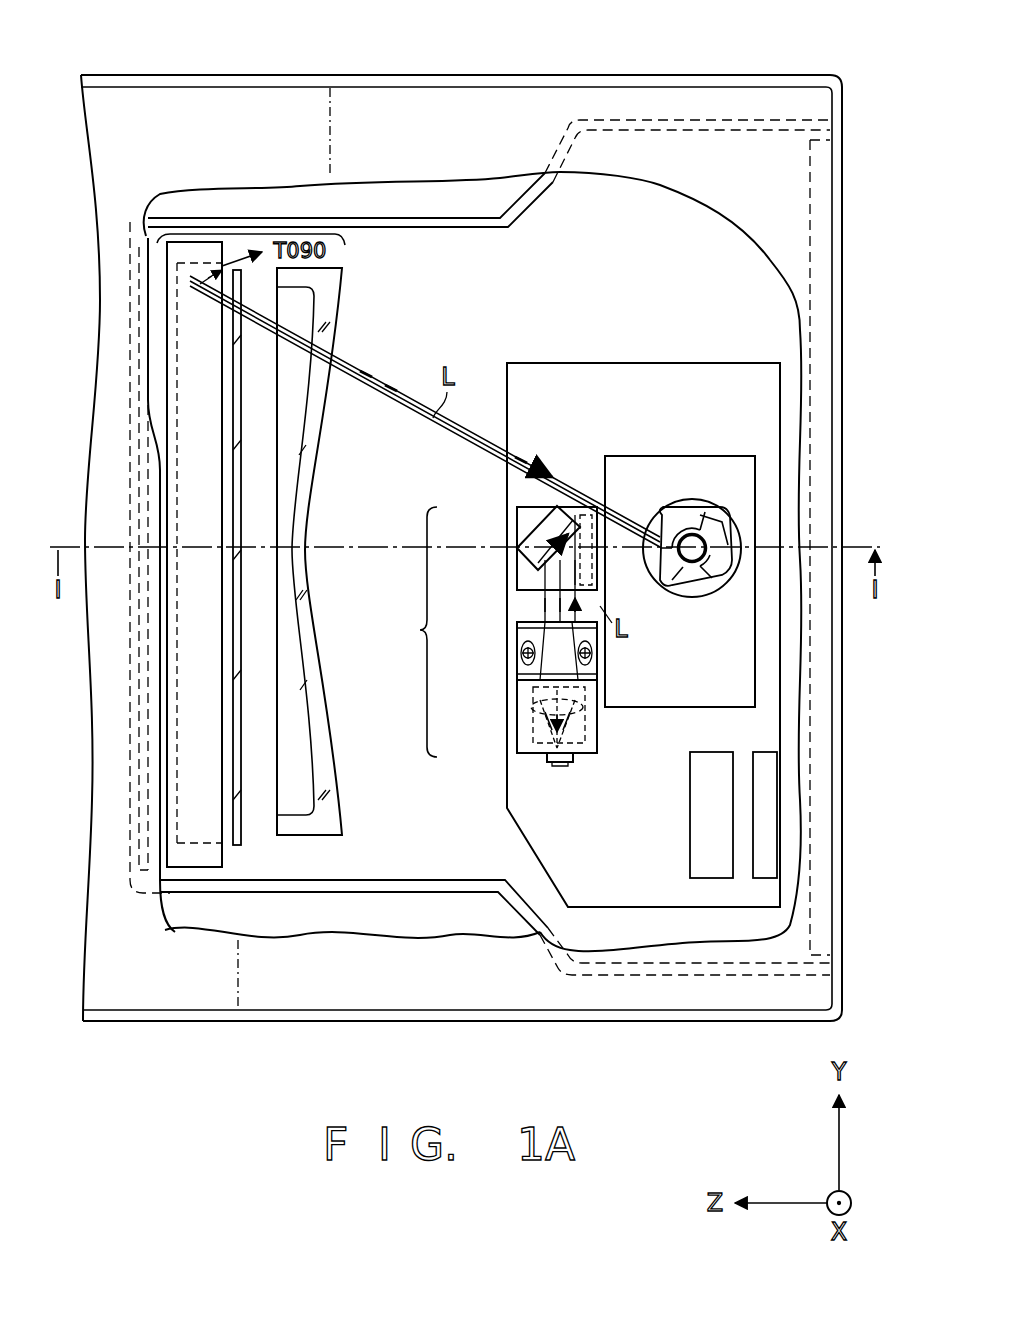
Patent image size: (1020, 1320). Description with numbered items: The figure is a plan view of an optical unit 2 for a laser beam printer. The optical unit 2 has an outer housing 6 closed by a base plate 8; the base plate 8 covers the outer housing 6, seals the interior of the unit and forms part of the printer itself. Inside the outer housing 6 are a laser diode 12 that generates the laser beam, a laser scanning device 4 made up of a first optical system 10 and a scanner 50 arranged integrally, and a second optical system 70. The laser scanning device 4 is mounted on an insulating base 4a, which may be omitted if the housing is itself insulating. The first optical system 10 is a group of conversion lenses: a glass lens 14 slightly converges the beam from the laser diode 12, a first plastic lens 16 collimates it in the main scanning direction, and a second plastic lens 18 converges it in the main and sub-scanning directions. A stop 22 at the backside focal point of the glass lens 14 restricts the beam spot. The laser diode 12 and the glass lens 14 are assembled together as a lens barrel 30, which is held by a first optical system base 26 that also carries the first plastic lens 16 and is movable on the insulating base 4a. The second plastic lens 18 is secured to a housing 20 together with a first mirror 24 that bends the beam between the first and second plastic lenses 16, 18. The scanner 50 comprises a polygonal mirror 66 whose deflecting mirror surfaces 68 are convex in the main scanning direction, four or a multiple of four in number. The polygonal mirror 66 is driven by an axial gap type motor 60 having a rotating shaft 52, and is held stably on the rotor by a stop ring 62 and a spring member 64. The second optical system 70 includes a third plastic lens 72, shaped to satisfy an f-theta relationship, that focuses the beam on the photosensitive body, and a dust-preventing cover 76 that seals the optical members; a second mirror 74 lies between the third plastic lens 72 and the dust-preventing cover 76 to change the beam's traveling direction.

The optical unit 2 is at (845, 74).
The laser scanning device 4 is at (556, 357).
The insulating base 4a is at (622, 380).
The outer housing 6 is at (205, 893).
The base plate 8 is at (487, 76).
The first optical system 10 is at (414, 632).
The laser diode 12 is at (557, 766).
The glass lens 14 is at (527, 719).
The first plastic lens 16 is at (540, 614).
The second plastic lens 18 is at (585, 512).
The housing 20 is at (532, 526).
The stop 22 is at (517, 681).
The first mirror 24 is at (530, 563).
The first optical system base 26 is at (519, 653).
The lens barrel 30 is at (525, 696).
The scanner 50 is at (670, 455).
The rotating shaft 52 is at (690, 533).
The axial gap type motor 60 is at (658, 510).
The stop ring 62 is at (718, 590).
The spring member 64 is at (662, 577).
The polygonal mirror 66 is at (688, 589).
The deflecting mirror surface 68 is at (717, 511).
The second optical system 70 is at (250, 232).
The third plastic lens 72 is at (325, 836).
The second mirror 74 is at (190, 870).
The dust-preventing cover 76 is at (238, 845).